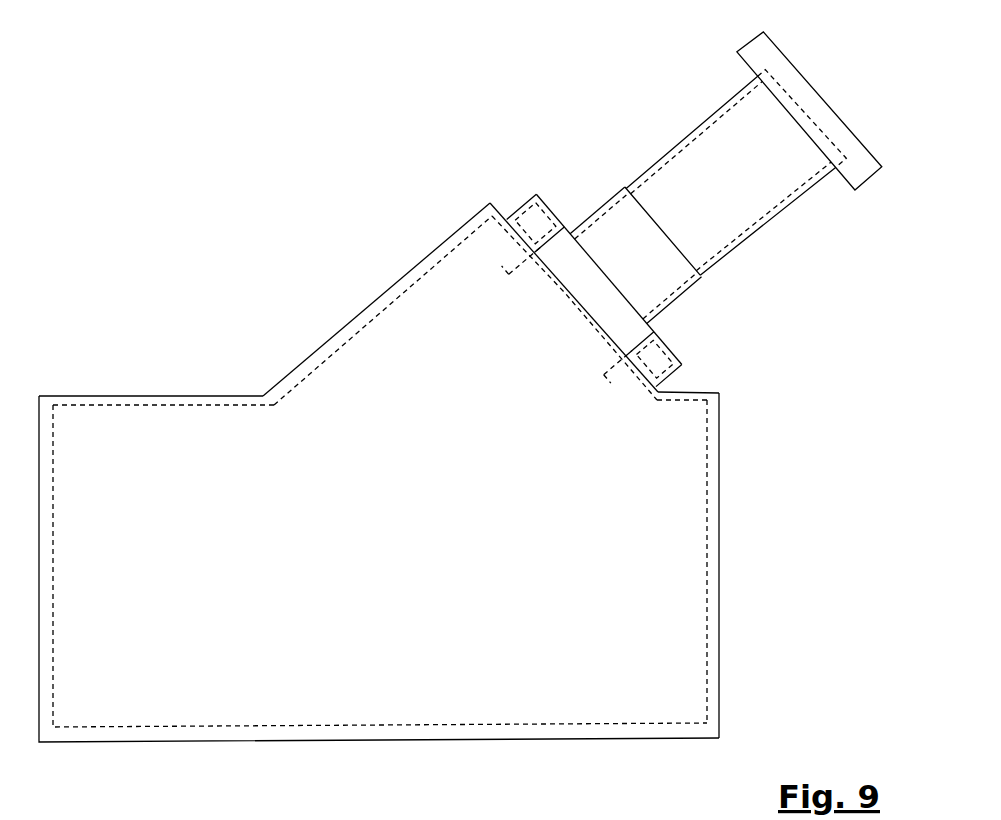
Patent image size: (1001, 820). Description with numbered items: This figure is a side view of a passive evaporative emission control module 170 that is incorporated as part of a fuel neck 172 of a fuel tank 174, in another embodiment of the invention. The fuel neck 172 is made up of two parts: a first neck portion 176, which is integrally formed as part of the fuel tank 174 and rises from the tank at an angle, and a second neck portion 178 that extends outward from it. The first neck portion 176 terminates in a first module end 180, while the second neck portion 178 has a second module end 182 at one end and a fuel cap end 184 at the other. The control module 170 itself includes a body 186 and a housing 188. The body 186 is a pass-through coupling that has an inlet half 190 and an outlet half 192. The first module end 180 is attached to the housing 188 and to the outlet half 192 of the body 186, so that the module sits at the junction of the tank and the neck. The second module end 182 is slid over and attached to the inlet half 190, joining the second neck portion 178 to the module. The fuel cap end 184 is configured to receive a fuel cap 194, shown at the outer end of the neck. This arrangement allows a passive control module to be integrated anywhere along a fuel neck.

The passive evaporative emission control module 170 is at (682, 366).
The fuel neck 172 is at (281, 383).
The fuel tank 174 is at (720, 506).
The first neck portion 176 is at (366, 309).
The second neck portion 178 is at (673, 148).
The first module end 180 is at (490, 200).
The second module end 182 is at (688, 307).
The fuel cap end 184 is at (760, 70).
The body 186 is at (597, 212).
The housing 188 is at (672, 385).
The inlet half 190 is at (620, 200).
The outlet half 192 is at (608, 375).
The fuel cap 194 is at (818, 93).